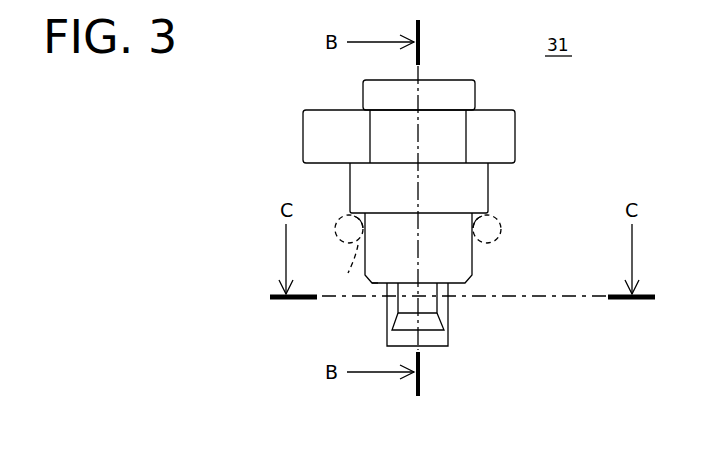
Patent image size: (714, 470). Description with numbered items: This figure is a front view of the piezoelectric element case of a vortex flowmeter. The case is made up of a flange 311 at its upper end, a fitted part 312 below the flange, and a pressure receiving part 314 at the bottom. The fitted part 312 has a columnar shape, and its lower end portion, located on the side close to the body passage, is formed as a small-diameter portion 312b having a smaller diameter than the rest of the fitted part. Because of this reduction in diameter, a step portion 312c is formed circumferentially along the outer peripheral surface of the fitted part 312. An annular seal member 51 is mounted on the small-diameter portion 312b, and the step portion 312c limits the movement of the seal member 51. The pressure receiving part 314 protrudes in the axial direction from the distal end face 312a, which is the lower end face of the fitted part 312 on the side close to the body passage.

The flange 311 is at (512, 125).
The fitted part 312 is at (475, 189).
The distal end face 312a is at (378, 285).
The small-diameter portion 312b is at (460, 258).
The step portion 312c is at (500, 228).
The pressure receiving part 314 is at (447, 313).
The seal member 51 is at (340, 267).